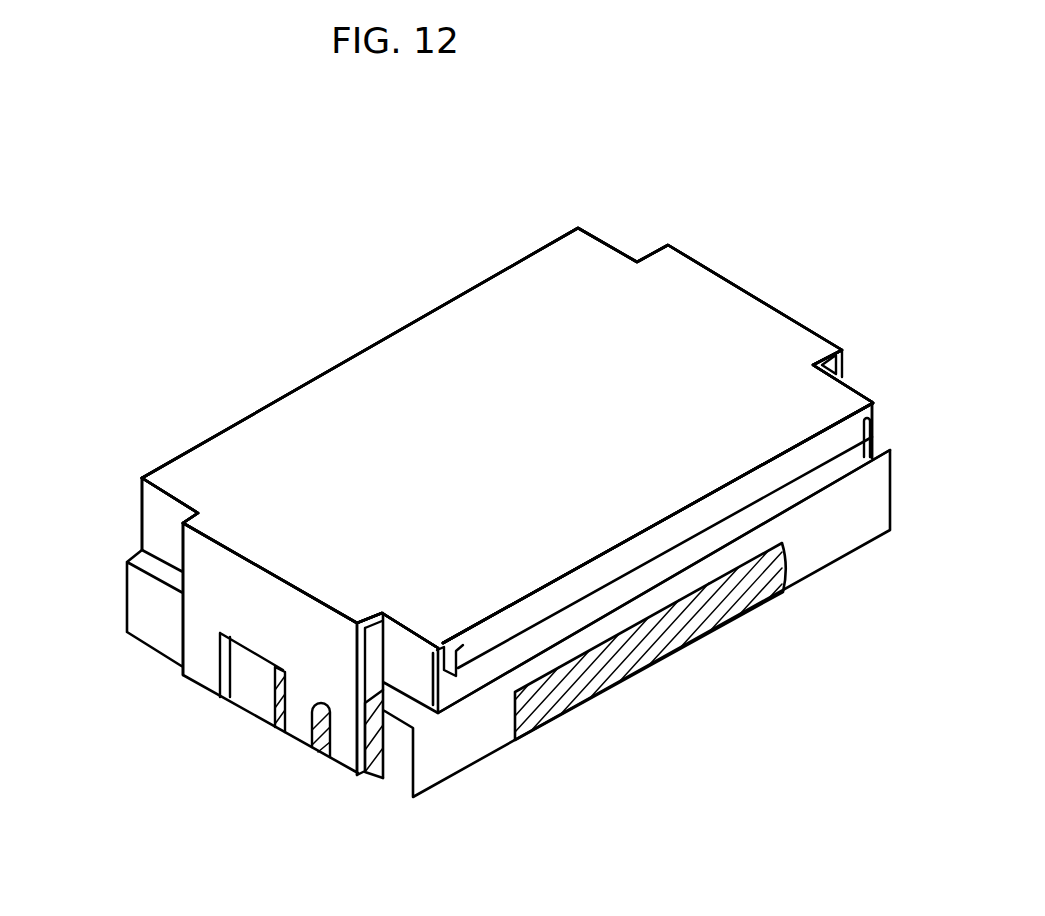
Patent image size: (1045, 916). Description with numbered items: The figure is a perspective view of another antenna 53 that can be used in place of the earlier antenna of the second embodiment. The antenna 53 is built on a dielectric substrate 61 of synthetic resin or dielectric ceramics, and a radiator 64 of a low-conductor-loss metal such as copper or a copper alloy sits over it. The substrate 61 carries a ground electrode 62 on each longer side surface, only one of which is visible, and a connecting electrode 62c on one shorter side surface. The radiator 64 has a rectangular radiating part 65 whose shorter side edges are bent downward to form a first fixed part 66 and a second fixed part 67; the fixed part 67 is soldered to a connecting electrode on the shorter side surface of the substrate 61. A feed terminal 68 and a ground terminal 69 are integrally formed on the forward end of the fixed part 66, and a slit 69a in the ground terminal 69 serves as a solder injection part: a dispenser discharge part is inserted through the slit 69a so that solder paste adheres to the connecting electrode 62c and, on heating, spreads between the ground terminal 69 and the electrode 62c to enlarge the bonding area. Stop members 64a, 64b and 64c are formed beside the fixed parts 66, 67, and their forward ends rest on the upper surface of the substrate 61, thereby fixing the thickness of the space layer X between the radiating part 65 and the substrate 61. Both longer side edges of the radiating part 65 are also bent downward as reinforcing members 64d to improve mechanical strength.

The antenna 53 is at (215, 250).
The radiator 64 is at (427, 307).
The radiating part 65 is at (330, 410).
The stop member 64a is at (148, 505).
The first fixed part 66 is at (208, 568).
The second fixed part 67 is at (845, 362).
The stop member 64c is at (876, 422).
The space layer X is at (810, 488).
The dielectric substrate 61 is at (832, 545).
The ground electrode 62 is at (637, 658).
The reinforcing member 64d is at (488, 637).
The stop member 64b is at (417, 672).
The connecting electrode 62c is at (387, 762).
The ground terminal 69 is at (350, 762).
The slit 69a is at (310, 730).
The feed terminal 68 is at (207, 672).